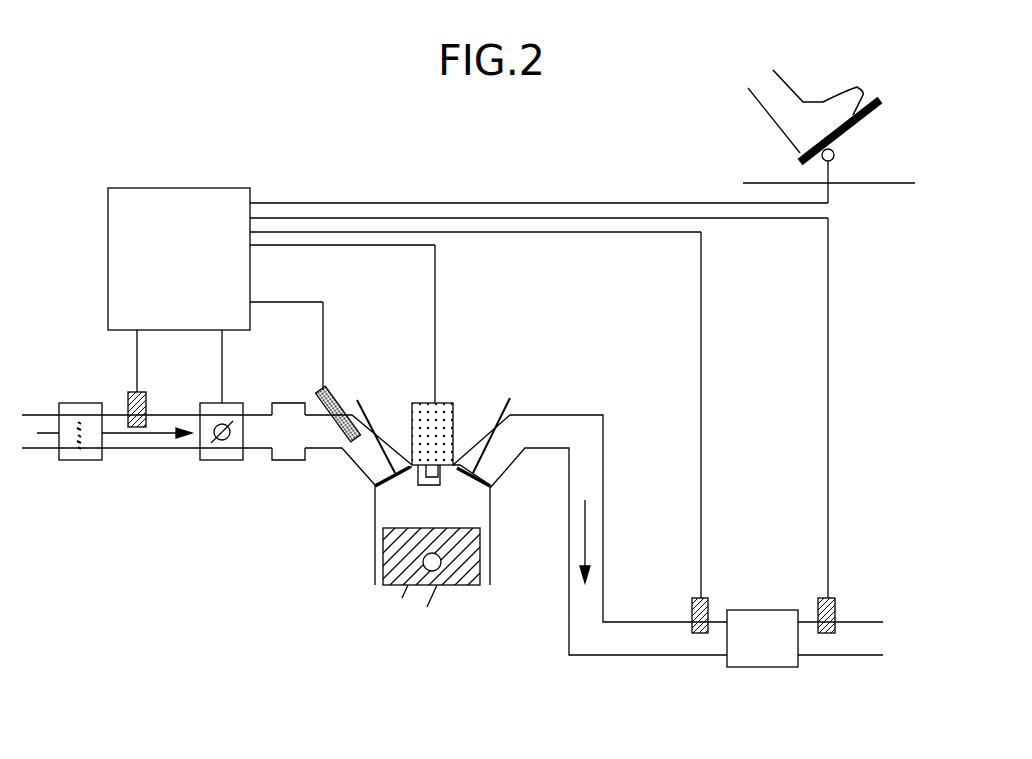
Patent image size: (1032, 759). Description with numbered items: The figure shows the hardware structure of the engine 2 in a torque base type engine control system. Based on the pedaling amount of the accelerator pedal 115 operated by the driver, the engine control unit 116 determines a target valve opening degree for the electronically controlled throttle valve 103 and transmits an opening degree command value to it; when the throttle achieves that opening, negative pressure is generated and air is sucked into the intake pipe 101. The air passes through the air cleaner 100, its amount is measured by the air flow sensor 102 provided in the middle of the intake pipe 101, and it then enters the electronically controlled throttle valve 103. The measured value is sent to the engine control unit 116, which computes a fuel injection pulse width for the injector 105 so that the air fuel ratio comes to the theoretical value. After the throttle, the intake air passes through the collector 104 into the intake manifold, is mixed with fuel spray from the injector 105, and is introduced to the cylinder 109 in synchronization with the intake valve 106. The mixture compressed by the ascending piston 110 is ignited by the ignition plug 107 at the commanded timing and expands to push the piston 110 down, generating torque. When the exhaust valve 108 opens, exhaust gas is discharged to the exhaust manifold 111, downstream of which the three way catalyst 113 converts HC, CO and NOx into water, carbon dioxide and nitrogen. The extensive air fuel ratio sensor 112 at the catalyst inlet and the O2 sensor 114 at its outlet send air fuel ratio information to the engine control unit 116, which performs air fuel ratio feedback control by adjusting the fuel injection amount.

The engine 2 is at (383, 557).
The air cleaner 100 is at (82, 460).
The intake pipe 101 is at (152, 448).
The air flow sensor 102 is at (128, 400).
The electronically controlled throttle valve 103 is at (223, 460).
The collector 104 is at (289, 448).
The injector 105 is at (340, 393).
The intake valve 106 is at (362, 408).
The ignition plug 107 is at (442, 410).
The exhaust valve 108 is at (510, 402).
The cylinder 109 is at (475, 508).
The piston 110 is at (470, 578).
The exhaust manifold 111 is at (592, 458).
The extensive air fuel ratio sensor 112 is at (703, 608).
The three way catalyst 113 is at (763, 668).
The O2 sensor 114 is at (828, 607).
The accelerator pedal sensor 115 is at (836, 153).
The engine control unit 116 is at (180, 188).